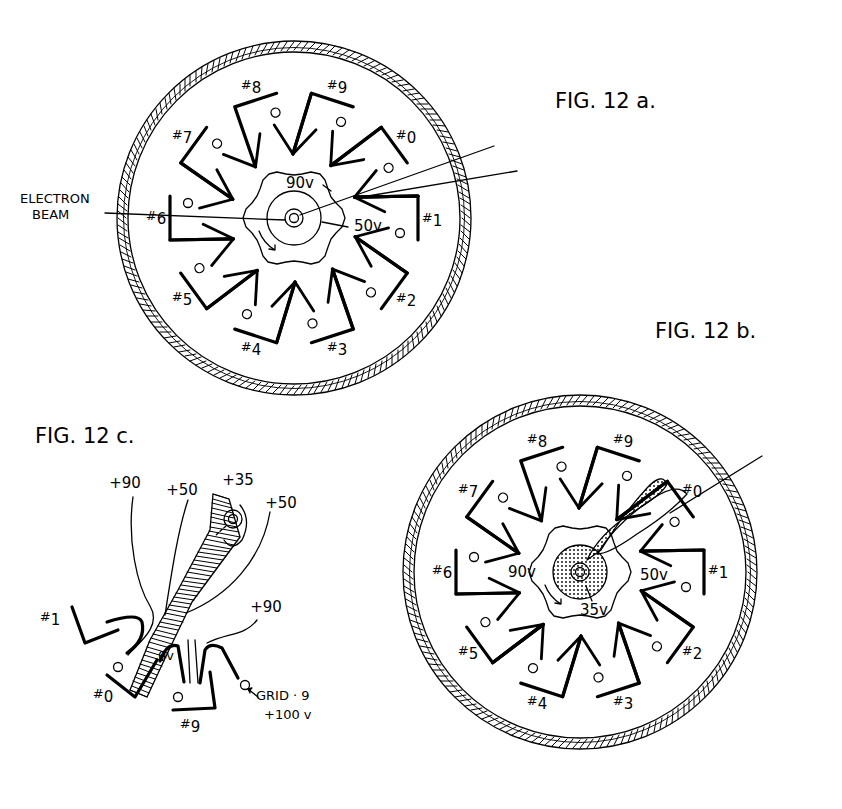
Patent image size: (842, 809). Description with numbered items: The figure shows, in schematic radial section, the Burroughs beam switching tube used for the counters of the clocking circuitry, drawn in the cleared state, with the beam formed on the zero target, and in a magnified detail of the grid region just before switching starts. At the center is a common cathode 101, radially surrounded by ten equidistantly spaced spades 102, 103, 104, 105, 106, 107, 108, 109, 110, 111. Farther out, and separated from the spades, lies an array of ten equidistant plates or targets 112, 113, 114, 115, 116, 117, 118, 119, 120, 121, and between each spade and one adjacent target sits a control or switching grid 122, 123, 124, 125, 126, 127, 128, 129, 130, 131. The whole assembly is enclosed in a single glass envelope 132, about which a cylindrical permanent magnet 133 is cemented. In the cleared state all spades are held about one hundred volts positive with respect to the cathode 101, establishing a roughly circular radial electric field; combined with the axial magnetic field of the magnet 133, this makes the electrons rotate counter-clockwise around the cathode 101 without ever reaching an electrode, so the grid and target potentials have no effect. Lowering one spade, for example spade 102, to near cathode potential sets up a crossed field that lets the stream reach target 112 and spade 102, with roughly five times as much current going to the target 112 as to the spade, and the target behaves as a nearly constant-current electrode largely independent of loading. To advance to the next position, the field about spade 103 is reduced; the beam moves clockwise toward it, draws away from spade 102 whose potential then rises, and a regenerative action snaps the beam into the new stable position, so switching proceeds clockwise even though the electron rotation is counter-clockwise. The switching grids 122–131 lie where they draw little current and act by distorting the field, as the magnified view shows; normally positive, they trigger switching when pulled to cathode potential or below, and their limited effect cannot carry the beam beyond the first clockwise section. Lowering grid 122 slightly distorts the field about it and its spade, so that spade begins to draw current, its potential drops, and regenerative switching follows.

In FIG. 12A, the common cathode 101 is at (395, 178).
In FIG. 12B, the common cathode 101 is at (478, 642).
In FIG. 12A, the spade 102 is at (355, 108).
In FIG. 12B, the spade 102 is at (642, 464).
In FIG. 12A, the spade 103 is at (394, 168).
In FIG. 12B, the spade 103 is at (680, 522).
In FIG. 12C, the spade 103 is at (116, 613).
In FIG. 12A, the spade 104 is at (392, 248).
In FIG. 12B, the spade 104 is at (678, 600).
In FIG. 12A, the spade 105 is at (381, 310).
In FIG. 12B, the spade 105 is at (667, 666).
In FIG. 12A, the spade 106 is at (311, 343).
In FIG. 12B, the spade 106 is at (597, 700).
In FIG. 12A, the spade 107 is at (235, 329).
In FIG. 12B, the spade 107 is at (520, 683).
In FIG. 12A, the spade 108 is at (205, 258).
In FIG. 12B, the spade 108 is at (466, 626).
In FIG. 12A, the spade 109 is at (205, 195).
In FIG. 12B, the spade 109 is at (457, 548).
In FIG. 12A, the spade 110 is at (240, 130).
In FIG. 12B, the spade 110 is at (494, 480).
In FIG. 12A, the spade 111 is at (294, 152).
In FIG. 12B, the spade 111 is at (580, 500).
In FIG. 12A, the target electrode 112 is at (353, 137).
In FIG. 12B, the target electrode 112 is at (639, 491).
In FIG. 12A, the target 113 is at (422, 202).
In FIG. 12B, the target 113 is at (702, 551).
In FIG. 12A, the target 114 is at (423, 283).
In FIG. 12B, the target 114 is at (697, 632).
In FIG. 12A, the target 115 is at (372, 355).
In FIG. 12B, the target 115 is at (645, 700).
In FIG. 12A, the target 116 is at (295, 287).
In FIG. 12B, the target 116 is at (581, 645).
In FIG. 12A, the target 117 is at (224, 315).
In FIG. 12B, the target 117 is at (510, 669).
In FIG. 12A, the target 118 is at (180, 255).
In FIG. 12B, the target 118 is at (466, 609).
In FIG. 12A, the target 119 is at (180, 181).
In FIG. 12B, the target 119 is at (466, 535).
In FIG. 12A, the target 120 is at (229, 129).
In FIG. 12B, the target 120 is at (515, 483).
In FIG. 12A, the target 121 is at (322, 45).
In FIG. 12B, the target 121 is at (609, 400).
In FIG. 12A, the switching grid 122 is at (392, 167).
In FIG. 12B, the switching grid 122 is at (679, 521).
In FIG. 12C, the switching grid 122 is at (112, 667).
In FIG. 12A, the control grid 123 is at (405, 233).
In FIG. 12B, the control grid 123 is at (691, 587).
In FIG. 12A, the control grid 124 is at (375, 296).
In FIG. 12B, the control grid 124 is at (661, 649).
In FIG. 12A, the control grid 125 is at (313, 328).
In FIG. 12B, the control grid 125 is at (599, 682).
In FIG. 12A, the control grid 126 is at (244, 318).
In FIG. 12B, the control grid 126 is at (530, 672).
In FIG. 12A, the control grid 127 is at (196, 271).
In FIG. 12B, the control grid 127 is at (481, 624).
In FIG. 12A, the control grid 128 is at (184, 202).
In FIG. 12B, the control grid 128 is at (470, 556).
In FIG. 12A, the control grid 129 is at (214, 142).
In FIG. 12B, the control grid 129 is at (500, 495).
In FIG. 12A, the control grid 130 is at (276, 108).
In FIG. 12B, the control grid 130 is at (562, 462).
In FIG. 12A, the control grid 131 is at (344, 119).
In FIG. 12B, the control grid 131 is at (630, 472).
In FIG. 12C, the control grid 131 is at (175, 701).
In FIG. 12A, the glass envelope 132 is at (411, 173).
In FIG. 12B, the glass envelope 132 is at (665, 500).
In FIG. 12A, the cylindrical permanent magnet 133 is at (452, 178).
In FIG. 12B, the cylindrical permanent magnet 133 is at (730, 478).